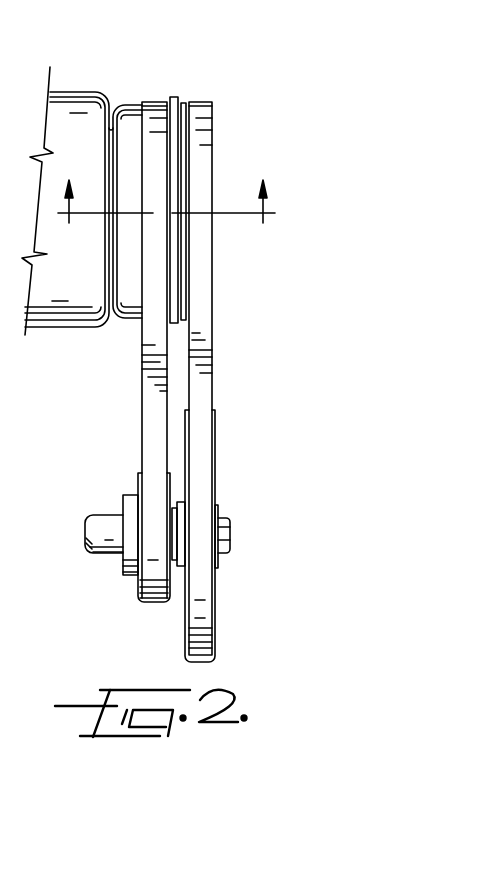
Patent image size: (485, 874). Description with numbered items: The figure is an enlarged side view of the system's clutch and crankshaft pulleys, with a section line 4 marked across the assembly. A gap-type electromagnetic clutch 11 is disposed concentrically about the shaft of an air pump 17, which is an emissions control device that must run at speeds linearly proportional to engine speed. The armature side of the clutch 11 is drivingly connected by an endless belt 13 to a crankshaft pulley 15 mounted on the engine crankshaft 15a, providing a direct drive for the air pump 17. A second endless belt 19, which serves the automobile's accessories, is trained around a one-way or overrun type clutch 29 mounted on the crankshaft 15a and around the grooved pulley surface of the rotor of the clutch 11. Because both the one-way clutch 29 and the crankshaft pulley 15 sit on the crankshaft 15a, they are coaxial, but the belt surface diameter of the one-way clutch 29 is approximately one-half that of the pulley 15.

The gap-type electromagnetic clutch 11 is at (216, 118).
The endless belt 13 is at (202, 378).
The crankshaft pulley 15 is at (213, 594).
The engine crankshaft 15a is at (106, 522).
The air pump 17 is at (78, 100).
The second endless belt 19 is at (153, 407).
The one-way clutch 29 is at (130, 563).
The section line 4- 4 is at (166, 219).